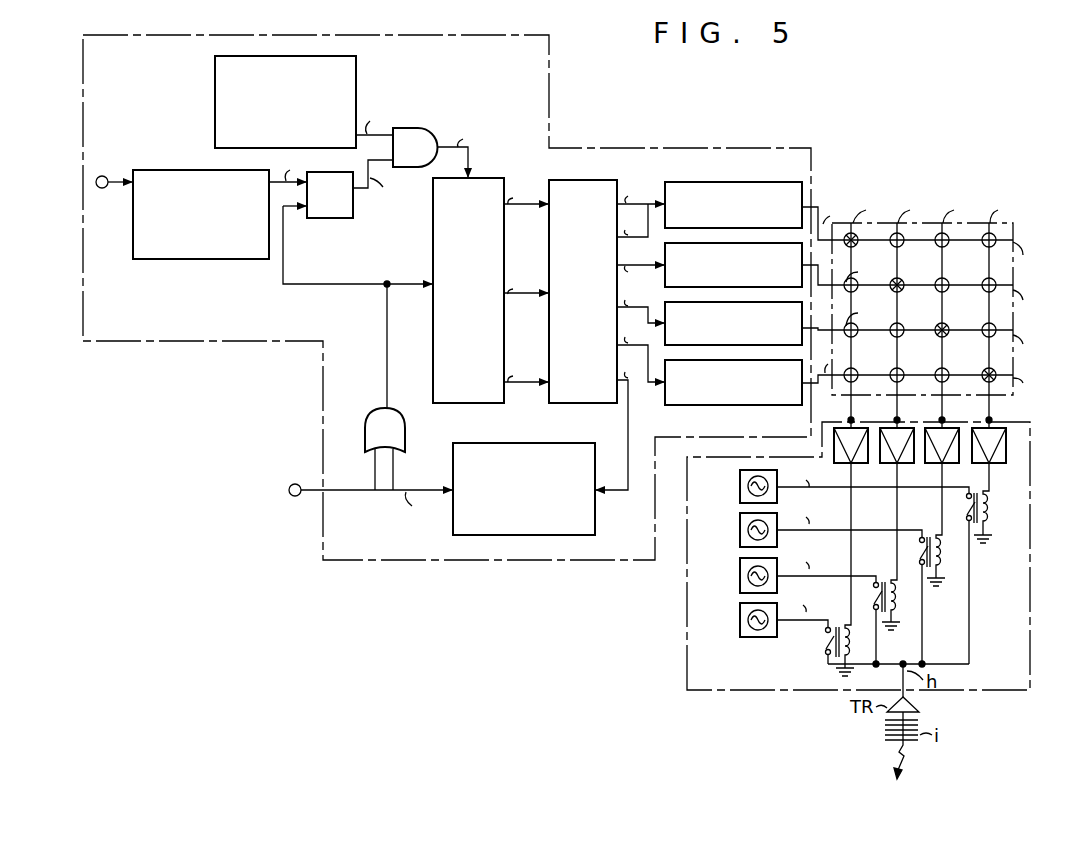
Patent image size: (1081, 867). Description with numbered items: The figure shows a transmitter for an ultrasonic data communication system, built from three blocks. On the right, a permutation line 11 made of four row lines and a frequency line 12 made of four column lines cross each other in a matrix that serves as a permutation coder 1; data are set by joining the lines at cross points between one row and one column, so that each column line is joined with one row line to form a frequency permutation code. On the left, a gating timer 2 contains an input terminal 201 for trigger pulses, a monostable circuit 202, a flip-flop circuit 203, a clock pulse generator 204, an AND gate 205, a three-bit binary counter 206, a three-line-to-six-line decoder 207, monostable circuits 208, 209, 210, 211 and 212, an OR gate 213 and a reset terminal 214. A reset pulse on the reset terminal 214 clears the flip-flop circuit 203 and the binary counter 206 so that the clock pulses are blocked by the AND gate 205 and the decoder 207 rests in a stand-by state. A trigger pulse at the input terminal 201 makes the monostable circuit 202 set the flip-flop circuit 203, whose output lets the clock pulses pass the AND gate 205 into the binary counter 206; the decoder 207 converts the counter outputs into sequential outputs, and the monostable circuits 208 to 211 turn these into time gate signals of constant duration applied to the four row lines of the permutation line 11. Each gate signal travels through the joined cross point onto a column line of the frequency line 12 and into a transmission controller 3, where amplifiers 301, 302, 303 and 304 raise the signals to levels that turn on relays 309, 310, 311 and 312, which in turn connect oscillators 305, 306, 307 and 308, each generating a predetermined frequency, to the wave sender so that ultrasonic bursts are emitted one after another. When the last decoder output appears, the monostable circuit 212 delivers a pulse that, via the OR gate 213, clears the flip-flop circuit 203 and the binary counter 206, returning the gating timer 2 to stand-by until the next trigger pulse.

The permutation coder 1 is at (1016, 236).
The gating timer 2 is at (551, 72).
The transmission controller 3 is at (686, 650).
The permutation line 11 is at (1043, 376).
The frequency line 12 is at (990, 190).
The input terminal 201 is at (106, 174).
The monostable circuit 202 is at (166, 260).
The flip-flop circuit 203 is at (340, 219).
The clock pulse generator 204 is at (215, 75).
The AND gate 205 is at (422, 127).
The three-bit binary counter 206 is at (480, 178).
The 3-line-to-6-line decoder 207 is at (560, 181).
The monostable circuit 208 is at (747, 182).
The monostable circuit 209 is at (798, 243).
The monostable circuit 210 is at (802, 317).
The monostable circuit 211 is at (748, 406).
The monostable circuit 212 is at (512, 443).
The OR gate 213 is at (372, 412).
The reset terminal 214 is at (293, 484).
The amplifier 301 is at (857, 457).
The amplifier 302 is at (903, 457).
The amplifier 303 is at (950, 457).
The amplifier 304 is at (1001, 457).
The oscillator 305 is at (737, 613).
The oscillator 306 is at (737, 568).
The oscillator 307 is at (740, 522).
The oscillator 308 is at (740, 477).
The relay 309 is at (822, 652).
The relay 310 is at (868, 592).
The relay 311 is at (918, 551).
The relay 312 is at (960, 513).